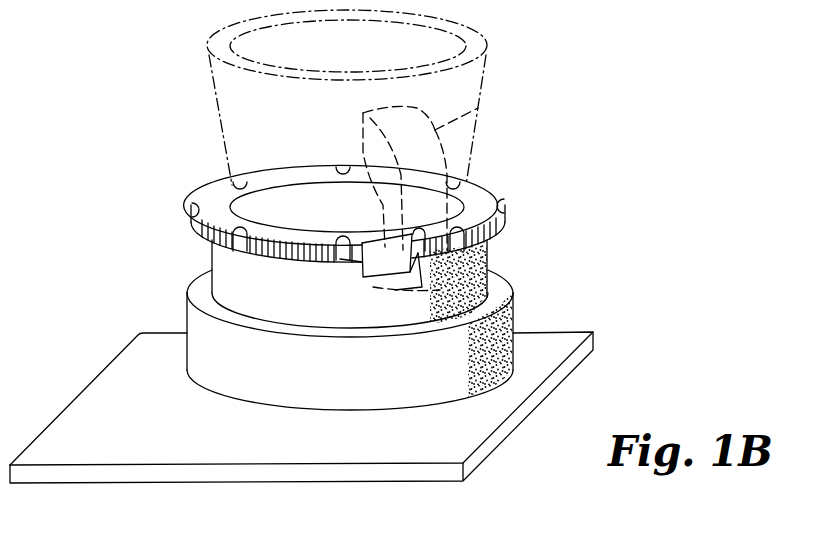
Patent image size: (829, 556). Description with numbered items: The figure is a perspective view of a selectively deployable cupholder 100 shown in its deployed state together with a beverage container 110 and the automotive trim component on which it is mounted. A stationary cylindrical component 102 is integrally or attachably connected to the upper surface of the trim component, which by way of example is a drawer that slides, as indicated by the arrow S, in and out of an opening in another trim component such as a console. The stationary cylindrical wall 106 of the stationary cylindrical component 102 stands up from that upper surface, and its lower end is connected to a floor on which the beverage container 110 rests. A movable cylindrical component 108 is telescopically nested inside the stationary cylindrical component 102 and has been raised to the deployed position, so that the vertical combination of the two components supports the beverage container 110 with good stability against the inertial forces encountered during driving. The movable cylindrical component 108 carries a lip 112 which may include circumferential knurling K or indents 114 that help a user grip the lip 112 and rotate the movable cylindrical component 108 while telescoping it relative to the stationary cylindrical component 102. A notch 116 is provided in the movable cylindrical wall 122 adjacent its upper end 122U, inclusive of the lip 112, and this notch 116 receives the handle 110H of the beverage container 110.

The selectively deployable cupholder 100 is at (381, 279).
The stationary cylindrical component 102 is at (512, 296).
The stationary cylindrical wall 106 is at (512, 323).
The movable cylindrical component 108 is at (493, 249).
The beverage container 110 is at (487, 57).
The handle 110H is at (478, 108).
The lip 112 is at (192, 222).
The indents 114 is at (348, 248).
The notch 116 is at (421, 288).
The movable cylindrical wall 122 is at (453, 293).
The upper end 122U is at (405, 267).
The circumferential knurling K is at (326, 255).
The arrow S is at (298, 509).